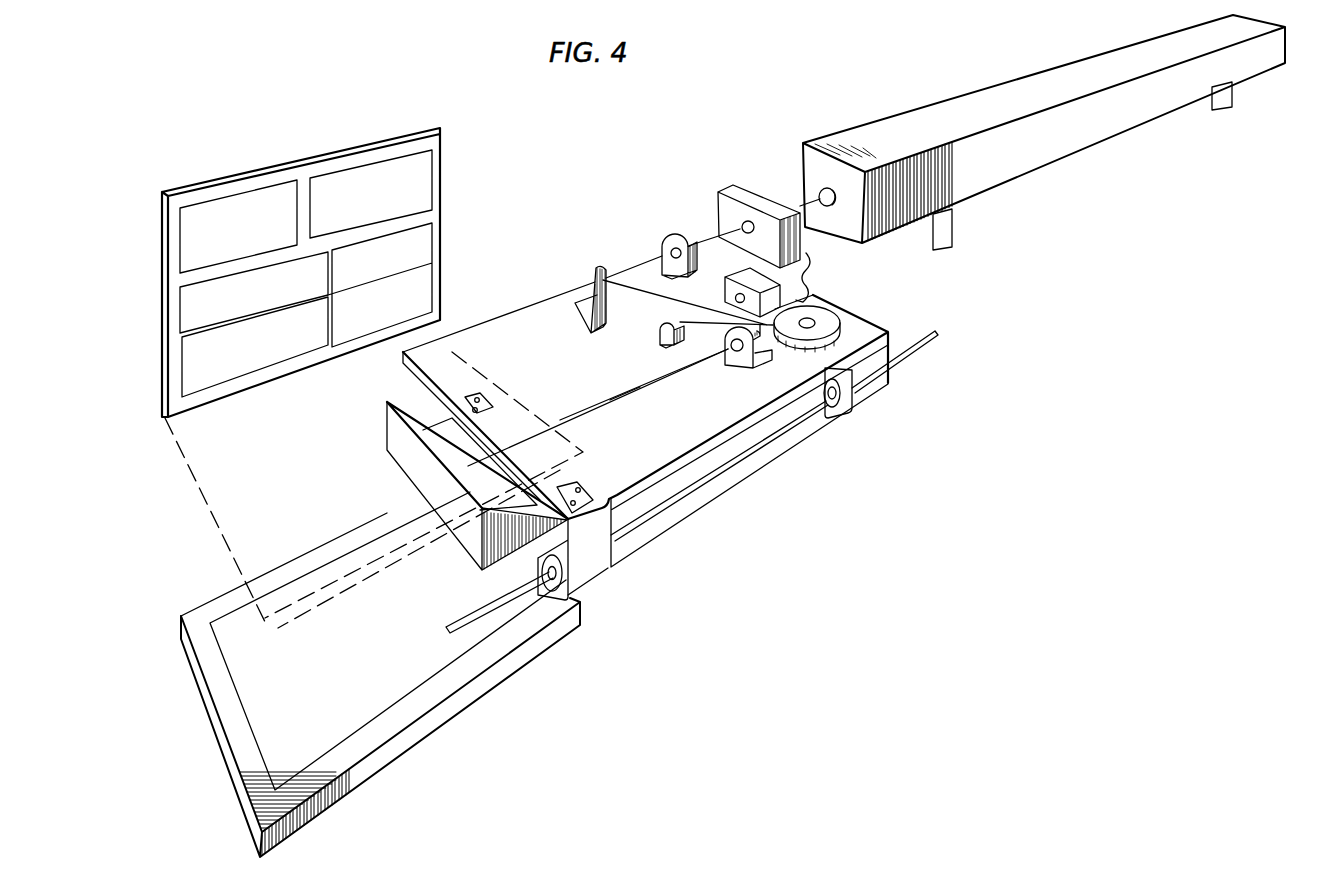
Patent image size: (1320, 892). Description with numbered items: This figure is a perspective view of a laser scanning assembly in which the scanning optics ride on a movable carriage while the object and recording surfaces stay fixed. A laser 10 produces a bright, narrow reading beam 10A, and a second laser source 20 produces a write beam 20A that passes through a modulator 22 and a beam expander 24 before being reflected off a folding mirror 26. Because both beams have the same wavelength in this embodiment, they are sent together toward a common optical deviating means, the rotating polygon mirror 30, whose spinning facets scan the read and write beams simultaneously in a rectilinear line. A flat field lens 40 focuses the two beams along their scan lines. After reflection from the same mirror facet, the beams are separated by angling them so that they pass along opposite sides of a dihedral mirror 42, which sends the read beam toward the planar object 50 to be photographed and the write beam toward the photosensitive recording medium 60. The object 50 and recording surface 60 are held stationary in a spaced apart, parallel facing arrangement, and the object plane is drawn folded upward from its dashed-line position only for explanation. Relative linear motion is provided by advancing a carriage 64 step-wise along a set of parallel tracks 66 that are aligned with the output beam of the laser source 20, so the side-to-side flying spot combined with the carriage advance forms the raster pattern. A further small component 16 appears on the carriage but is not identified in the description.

The laser 10 is at (815, 295).
The reading beam 10A is at (610, 402).
The aperture bracket 16 is at (660, 332).
The laser source 20 is at (1157, 97).
The second beam 20A is at (627, 403).
The modulator 22 is at (718, 203).
The beam expander 24 is at (675, 250).
The folding mirror 26 is at (593, 273).
The rotating polygon mirror 30 is at (840, 315).
The flat field lens 40 is at (738, 362).
The dihedral mirror 42 is at (420, 462).
The object to be photographed 50 is at (407, 253).
The photosensitive recording medium 60 is at (398, 648).
The carriage 64 is at (870, 402).
The parallel tracks 66 is at (918, 343).